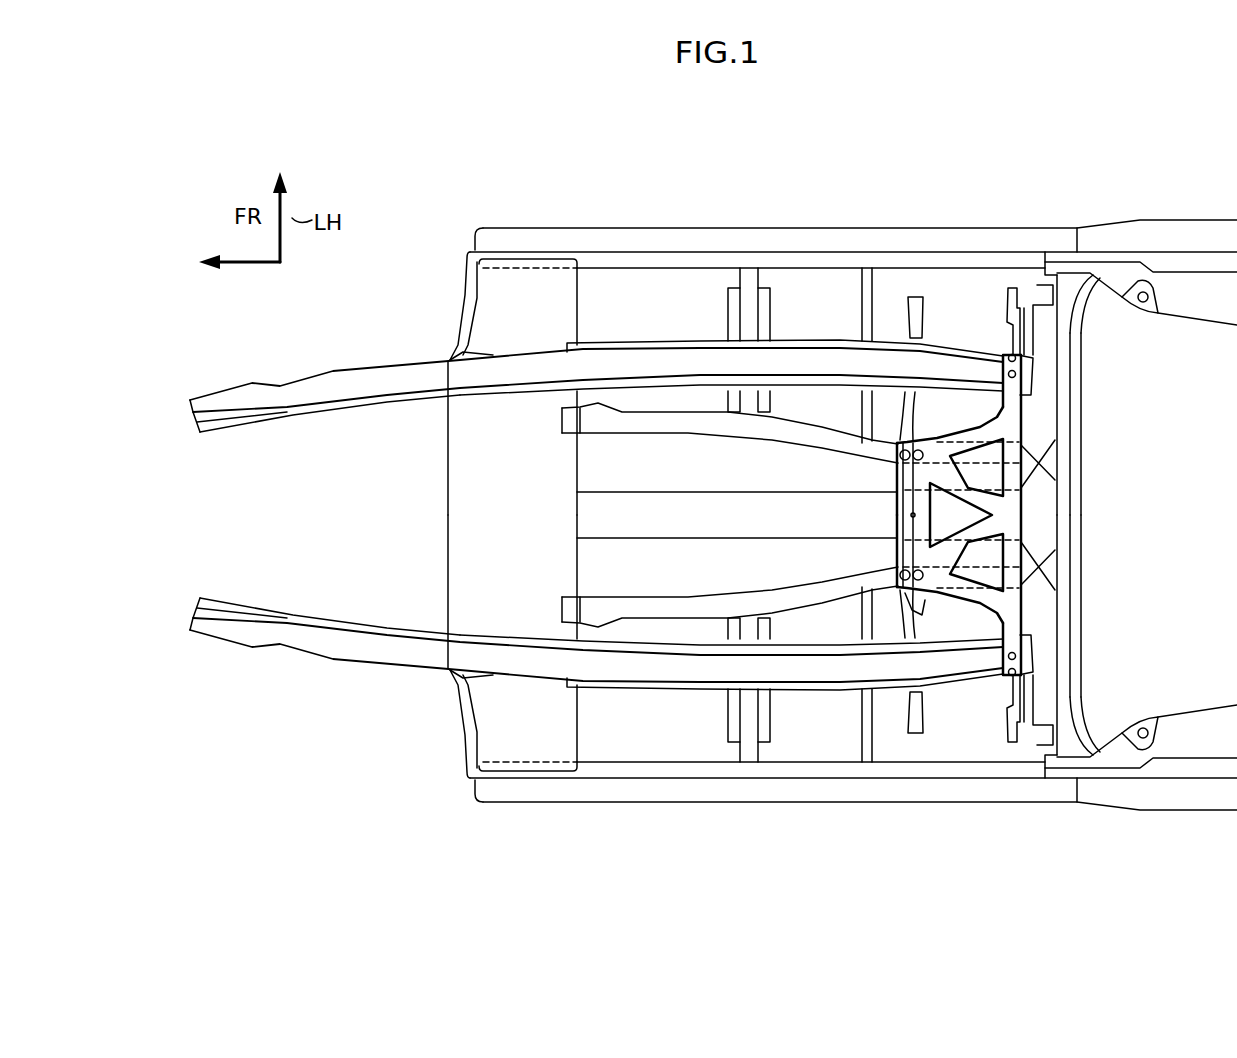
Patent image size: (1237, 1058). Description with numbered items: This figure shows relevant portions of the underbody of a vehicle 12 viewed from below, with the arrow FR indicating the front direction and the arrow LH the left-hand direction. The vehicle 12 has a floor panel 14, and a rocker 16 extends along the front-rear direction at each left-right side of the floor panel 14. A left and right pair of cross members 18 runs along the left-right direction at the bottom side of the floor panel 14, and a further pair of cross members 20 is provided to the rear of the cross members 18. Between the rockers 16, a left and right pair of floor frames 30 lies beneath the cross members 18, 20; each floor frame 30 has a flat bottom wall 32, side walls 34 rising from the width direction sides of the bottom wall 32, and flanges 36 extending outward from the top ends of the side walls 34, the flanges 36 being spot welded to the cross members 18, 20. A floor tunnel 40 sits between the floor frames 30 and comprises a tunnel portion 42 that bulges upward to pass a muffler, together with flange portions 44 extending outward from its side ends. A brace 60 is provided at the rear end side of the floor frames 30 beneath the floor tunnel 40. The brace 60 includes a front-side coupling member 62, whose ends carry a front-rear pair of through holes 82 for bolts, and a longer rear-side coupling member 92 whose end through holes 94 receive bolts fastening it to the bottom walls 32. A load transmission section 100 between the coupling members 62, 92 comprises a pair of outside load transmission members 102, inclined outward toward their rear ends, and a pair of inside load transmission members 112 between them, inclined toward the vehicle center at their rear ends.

The vehicle 12 is at (1032, 184).
The floor panel 14 is at (658, 764).
The rocker 16 is at (622, 242).
The cross member 18 is at (757, 315).
The cross member 20 is at (908, 290).
The floor frame 30 is at (389, 347).
The bottom wall 32 is at (391, 395).
The side wall 34 is at (335, 372).
The flange 36 is at (633, 341).
The floor tunnel 40 is at (563, 469).
The tunnel portion 42 is at (615, 528).
The flange portion 44 is at (680, 412).
The brace 60 is at (879, 497).
The front-side coupling member 62 is at (895, 521).
The through hole 82 is at (913, 440).
The rear-side coupling member 92 is at (1013, 550).
The through hole 94 is at (1027, 360).
The load transmission section 100 is at (989, 630).
The outside load transmission member 102 is at (987, 430).
The inside load transmission member 112 is at (1020, 463).